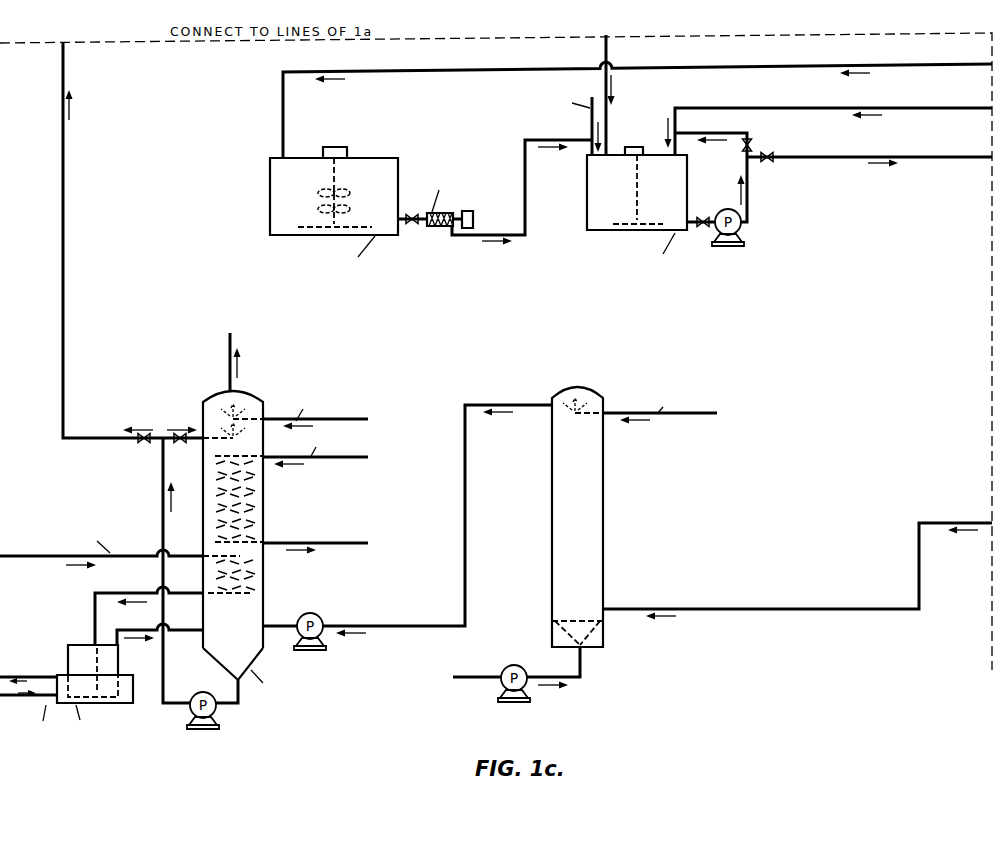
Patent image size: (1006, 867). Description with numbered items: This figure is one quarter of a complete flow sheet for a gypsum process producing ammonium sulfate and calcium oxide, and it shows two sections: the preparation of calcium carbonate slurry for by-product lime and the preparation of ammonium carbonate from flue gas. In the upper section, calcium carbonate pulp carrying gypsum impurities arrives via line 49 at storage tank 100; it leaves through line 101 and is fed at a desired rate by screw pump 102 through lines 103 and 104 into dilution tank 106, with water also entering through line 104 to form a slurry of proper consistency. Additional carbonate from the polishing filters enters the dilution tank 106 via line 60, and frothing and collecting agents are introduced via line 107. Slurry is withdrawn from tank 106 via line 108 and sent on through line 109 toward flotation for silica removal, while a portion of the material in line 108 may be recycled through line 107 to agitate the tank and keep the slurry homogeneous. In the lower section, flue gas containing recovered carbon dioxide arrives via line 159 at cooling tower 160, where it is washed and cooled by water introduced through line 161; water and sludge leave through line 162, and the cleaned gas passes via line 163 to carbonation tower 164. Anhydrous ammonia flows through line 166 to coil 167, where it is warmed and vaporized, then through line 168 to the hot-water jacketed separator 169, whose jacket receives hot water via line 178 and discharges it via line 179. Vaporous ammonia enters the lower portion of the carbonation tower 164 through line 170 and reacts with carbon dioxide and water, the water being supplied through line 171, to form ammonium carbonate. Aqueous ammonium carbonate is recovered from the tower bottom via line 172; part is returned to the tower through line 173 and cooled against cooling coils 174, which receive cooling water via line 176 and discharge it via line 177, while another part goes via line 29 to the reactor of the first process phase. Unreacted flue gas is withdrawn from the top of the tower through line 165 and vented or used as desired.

The line 29 is at (63, 232).
The line 49 is at (895, 66).
The line 60 is at (609, 136).
The storage tank 100 is at (270, 197).
The line 101 is at (411, 215).
The screw pump 102 is at (435, 228).
The line 103 is at (526, 199).
The line 104 is at (591, 126).
The dilution tank 106 is at (587, 222).
The line 107 is at (879, 108).
The line 108 is at (749, 191).
The line 109 is at (894, 157).
The line 159 is at (748, 609).
The cooling tower 160 is at (604, 519).
The line 161 is at (607, 414).
The line 162 is at (582, 666).
The line 163 is at (466, 535).
The carbonation tower 164 is at (310, 489).
The line 165 is at (227, 357).
The line 166 is at (44, 559).
The coil 167 is at (243, 580).
The line 168 is at (147, 593).
The separator 169 is at (68, 647).
The line 170 is at (121, 632).
The line 171 is at (266, 421).
The line 172 is at (170, 675).
The line 173 is at (198, 443).
The cooling coils 174 is at (263, 489).
The line 176 is at (266, 459).
The line 177 is at (328, 542).
The line 178 is at (36, 697).
The line 179 is at (49, 677).